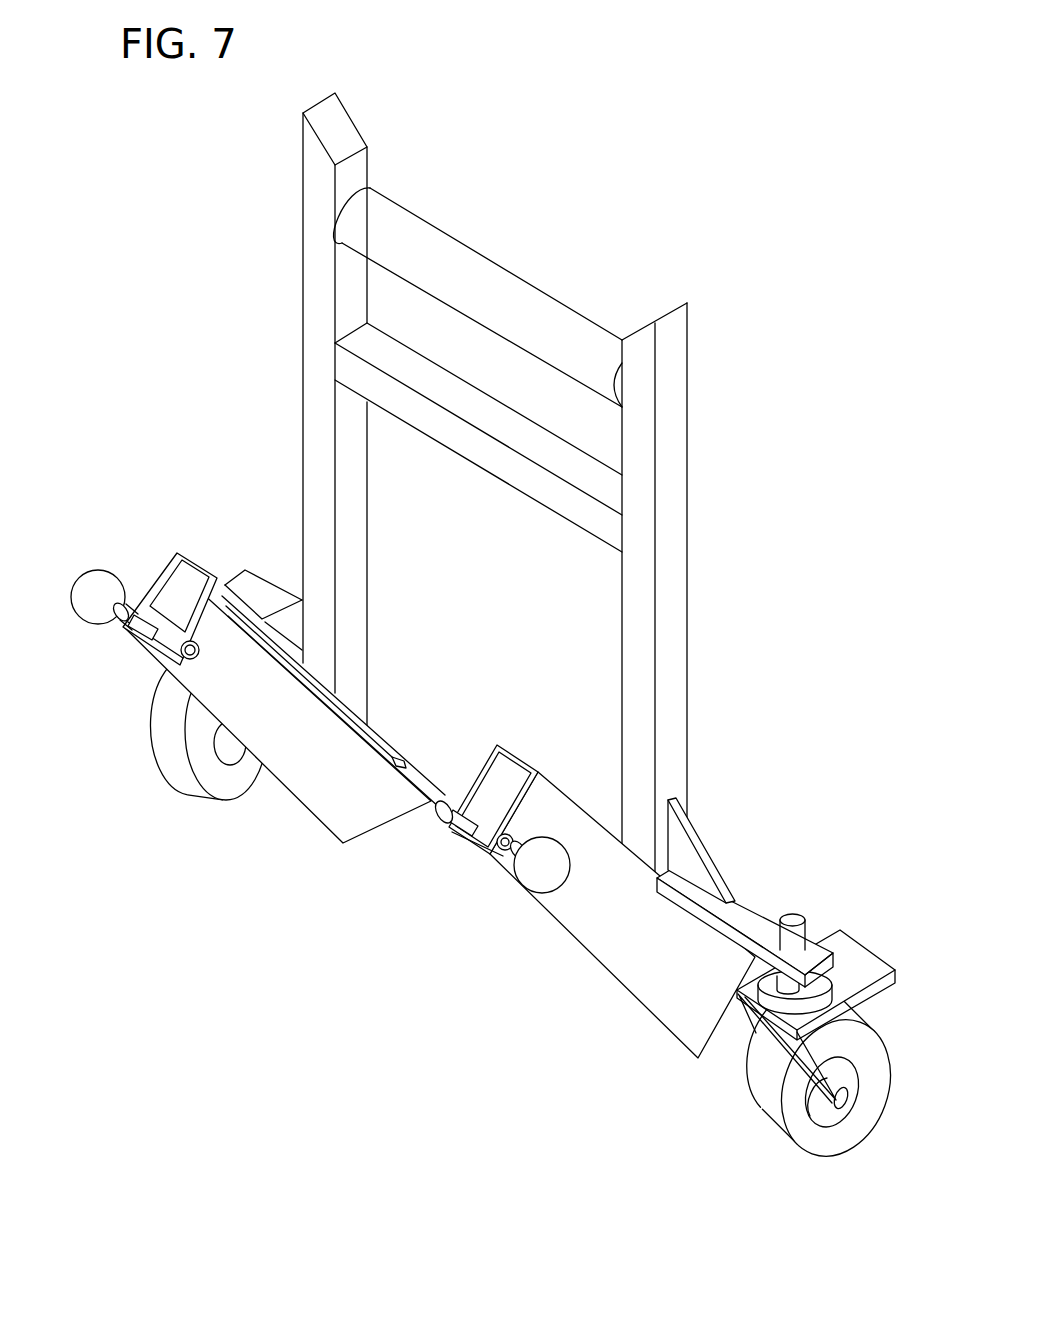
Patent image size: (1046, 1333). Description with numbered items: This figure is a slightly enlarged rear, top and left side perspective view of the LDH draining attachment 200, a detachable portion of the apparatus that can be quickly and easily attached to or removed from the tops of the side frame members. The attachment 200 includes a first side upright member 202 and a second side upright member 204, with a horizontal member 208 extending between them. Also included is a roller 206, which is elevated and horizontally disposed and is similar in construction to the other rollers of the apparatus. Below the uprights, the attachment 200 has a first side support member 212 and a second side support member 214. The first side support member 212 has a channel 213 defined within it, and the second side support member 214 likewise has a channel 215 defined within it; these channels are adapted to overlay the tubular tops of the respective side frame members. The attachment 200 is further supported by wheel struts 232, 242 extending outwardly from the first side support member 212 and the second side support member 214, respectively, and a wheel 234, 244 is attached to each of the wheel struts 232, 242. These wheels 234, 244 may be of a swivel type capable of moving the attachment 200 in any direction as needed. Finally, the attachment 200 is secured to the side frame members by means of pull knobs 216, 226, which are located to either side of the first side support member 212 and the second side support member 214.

The LDH draining attachment 200 is at (584, 178).
The first side upright member 202 is at (668, 490).
The second side upright member 204 is at (318, 408).
The roller 206 is at (413, 233).
The horizontal member 208 is at (475, 447).
The first side support member 212 is at (547, 817).
The channel 213 is at (485, 788).
The second side support member 214 is at (207, 673).
The channel 215 is at (177, 594).
The pull knob 216 is at (535, 875).
The pull knob 226 is at (85, 610).
The wheel strut 232 is at (755, 922).
The wheel 234 is at (757, 1093).
The wheel strut 242 is at (263, 595).
The wheel 244 is at (217, 787).